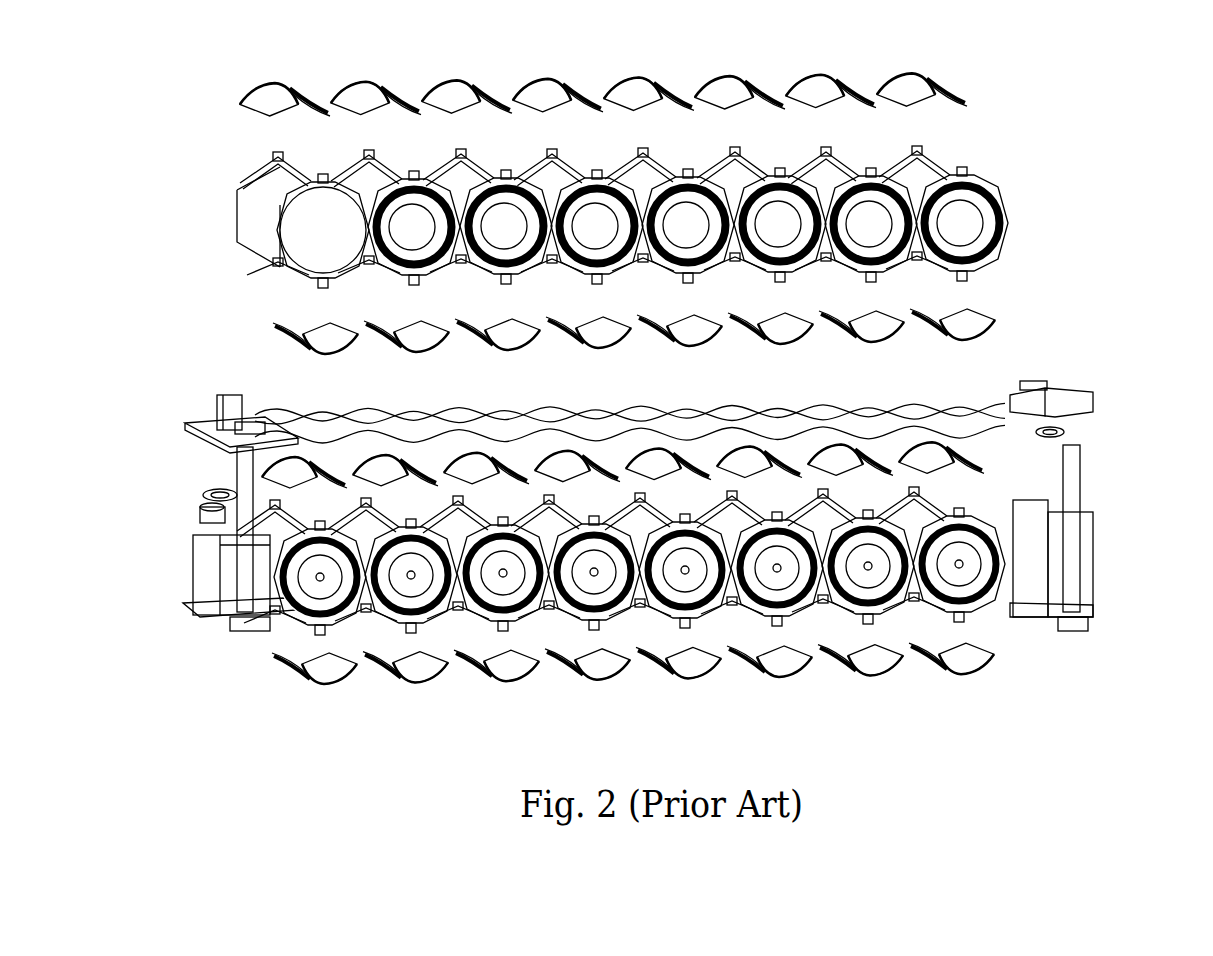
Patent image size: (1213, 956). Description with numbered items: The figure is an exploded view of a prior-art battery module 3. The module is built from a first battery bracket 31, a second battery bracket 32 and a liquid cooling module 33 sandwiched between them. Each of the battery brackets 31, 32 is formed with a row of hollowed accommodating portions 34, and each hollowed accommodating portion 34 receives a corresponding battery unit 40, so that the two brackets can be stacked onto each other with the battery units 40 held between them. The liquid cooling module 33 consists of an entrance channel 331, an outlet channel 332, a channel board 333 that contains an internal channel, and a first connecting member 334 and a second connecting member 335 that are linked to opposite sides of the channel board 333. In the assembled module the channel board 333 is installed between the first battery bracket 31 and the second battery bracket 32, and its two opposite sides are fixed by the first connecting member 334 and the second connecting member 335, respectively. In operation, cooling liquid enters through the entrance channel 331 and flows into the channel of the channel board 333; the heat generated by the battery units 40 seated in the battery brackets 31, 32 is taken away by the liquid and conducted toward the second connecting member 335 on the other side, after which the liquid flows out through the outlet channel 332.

The battery module 3 is at (147, 75).
The first battery bracket 31 is at (1010, 187).
The second battery bracket 32 is at (975, 527).
The liquid cooling module 33 is at (203, 440).
The hollowed accommodating portion 34 is at (316, 237).
The battery unit 40 is at (980, 220).
The entrance channel 331 is at (230, 420).
The outlet channel 332 is at (1073, 625).
The channel board 333 is at (645, 412).
The first connecting member 334 is at (192, 598).
The second connecting member 335 is at (1035, 568).